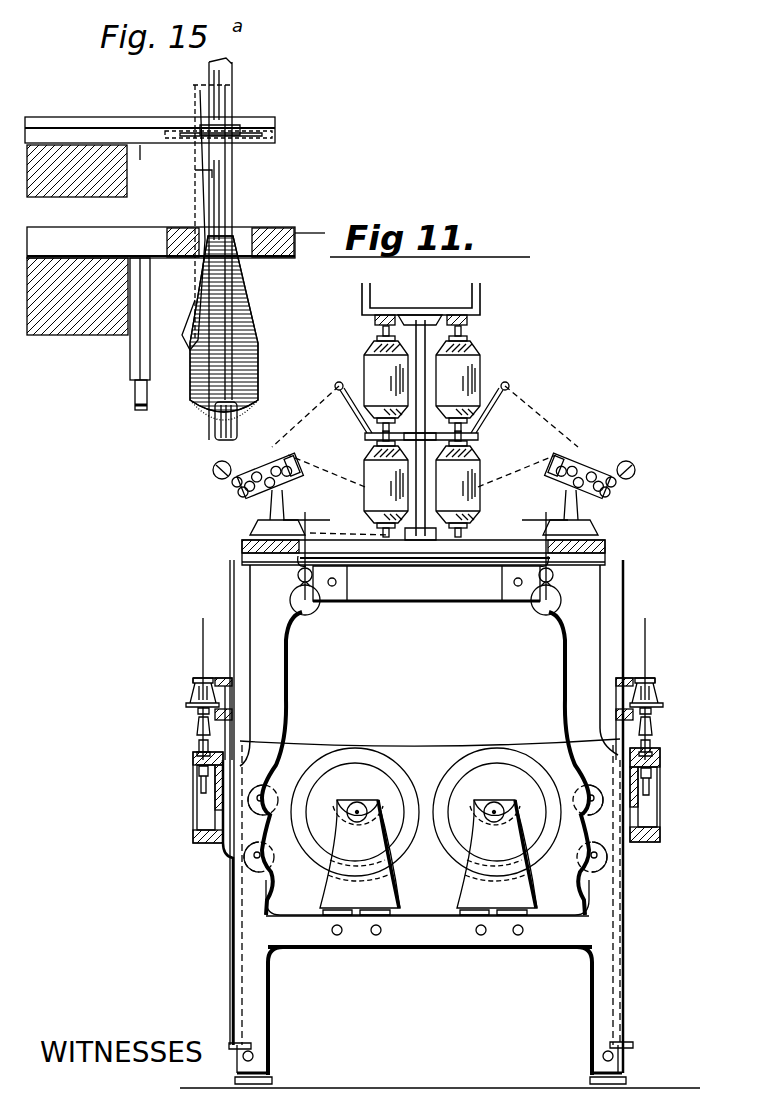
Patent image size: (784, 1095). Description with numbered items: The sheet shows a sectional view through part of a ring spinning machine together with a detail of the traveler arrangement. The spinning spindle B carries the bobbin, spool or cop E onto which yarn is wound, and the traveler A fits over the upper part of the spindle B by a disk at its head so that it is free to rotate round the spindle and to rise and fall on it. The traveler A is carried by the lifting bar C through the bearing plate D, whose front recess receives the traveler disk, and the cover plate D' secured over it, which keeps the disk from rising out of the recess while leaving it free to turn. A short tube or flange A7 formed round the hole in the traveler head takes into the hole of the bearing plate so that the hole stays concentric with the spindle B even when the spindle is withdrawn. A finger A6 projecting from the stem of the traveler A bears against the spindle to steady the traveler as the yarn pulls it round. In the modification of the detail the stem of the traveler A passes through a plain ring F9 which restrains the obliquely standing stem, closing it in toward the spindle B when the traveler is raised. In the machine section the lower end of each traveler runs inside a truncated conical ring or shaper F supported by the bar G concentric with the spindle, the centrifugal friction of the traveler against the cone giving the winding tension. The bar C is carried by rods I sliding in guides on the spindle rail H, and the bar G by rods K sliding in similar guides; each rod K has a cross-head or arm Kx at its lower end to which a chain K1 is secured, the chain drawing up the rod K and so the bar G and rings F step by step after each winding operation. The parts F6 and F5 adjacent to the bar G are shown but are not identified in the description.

In FIG. 15A, the spinning spindle B is at (215, 100).
In FIG. 11, the spinning spindle B is at (205, 640).
In FIG. 15A, the cover plate D' is at (150, 116).
In FIG. 15A, the short tube or flange A7 is at (242, 128).
In FIG. 15A, the bearing plate D is at (148, 160).
In FIG. 15A, the bar C is at (95, 190).
In FIG. 11, the bar C is at (232, 683).
In FIG. 15A, the finger A6 is at (208, 172).
In FIG. 15A, the traveler A is at (190, 210).
In FIG. 15A, the plain ring F9 is at (262, 232).
In FIG. 15A, the bar G is at (105, 325).
In FIG. 11, the bar G is at (232, 713).
In FIG. 15A, the rod F6 is at (130, 372).
In FIG. 15A, the pin F5 is at (135, 403).
In FIG. 15A, the bobbin, spool or cop E is at (232, 380).
In FIG. 11, the truncated conical ring or shaper F is at (190, 692).
In FIG. 11, the rod I is at (232, 698).
In FIG. 11, the spindle rail H is at (193, 758).
In FIG. 11, the rod K is at (230, 925).
In FIG. 11, the chain K1 is at (244, 930).
In FIG. 11, the cross-head or arm Kx is at (229, 1046).